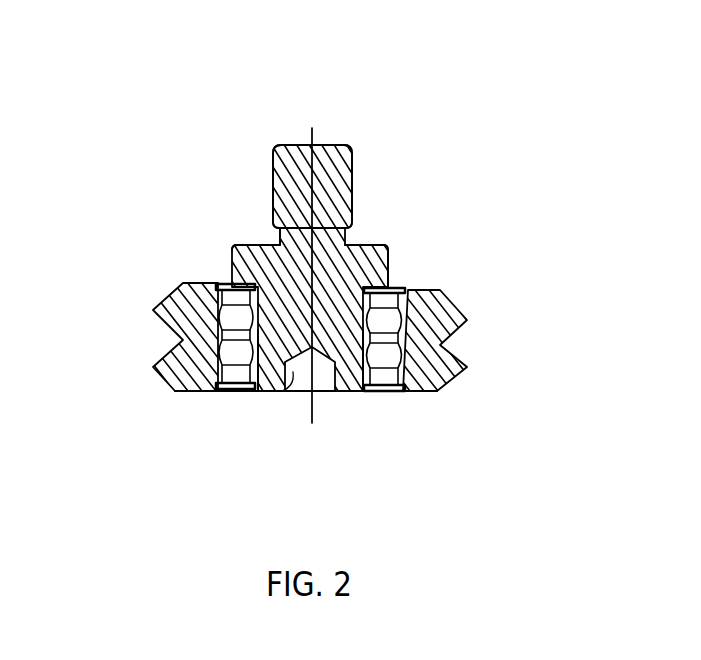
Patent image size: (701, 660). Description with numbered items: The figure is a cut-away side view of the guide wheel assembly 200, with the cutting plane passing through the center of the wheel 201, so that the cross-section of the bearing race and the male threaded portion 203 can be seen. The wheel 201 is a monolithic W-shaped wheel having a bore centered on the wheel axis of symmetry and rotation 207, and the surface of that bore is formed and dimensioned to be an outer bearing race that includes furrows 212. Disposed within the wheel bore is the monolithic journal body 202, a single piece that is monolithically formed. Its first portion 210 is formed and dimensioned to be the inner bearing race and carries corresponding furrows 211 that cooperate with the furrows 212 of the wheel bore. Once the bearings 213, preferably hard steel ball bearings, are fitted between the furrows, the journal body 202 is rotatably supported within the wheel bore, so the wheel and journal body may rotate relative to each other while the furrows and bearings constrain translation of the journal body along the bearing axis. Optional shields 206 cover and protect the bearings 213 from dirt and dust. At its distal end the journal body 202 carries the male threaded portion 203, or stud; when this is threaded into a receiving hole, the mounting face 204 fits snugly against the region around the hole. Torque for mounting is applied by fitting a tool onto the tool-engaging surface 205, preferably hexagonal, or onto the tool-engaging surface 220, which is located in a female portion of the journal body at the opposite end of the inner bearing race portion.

The guide wheel assembly 200 is at (607, 108).
The wheel 201 is at (450, 386).
The journal body 202 is at (302, 147).
The male threaded portion 203 is at (273, 191).
The mounting face 204 is at (364, 246).
The tool-engaging surface 205 is at (388, 278).
The shields 206 is at (227, 283).
The wheel axis of symmetry 207 is at (313, 130).
The first portion 210 is at (366, 340).
The furrows 211 is at (263, 395).
The furrows 212 is at (238, 307).
The bearings 213 is at (240, 357).
The tool-engaging surface 220 is at (290, 391).